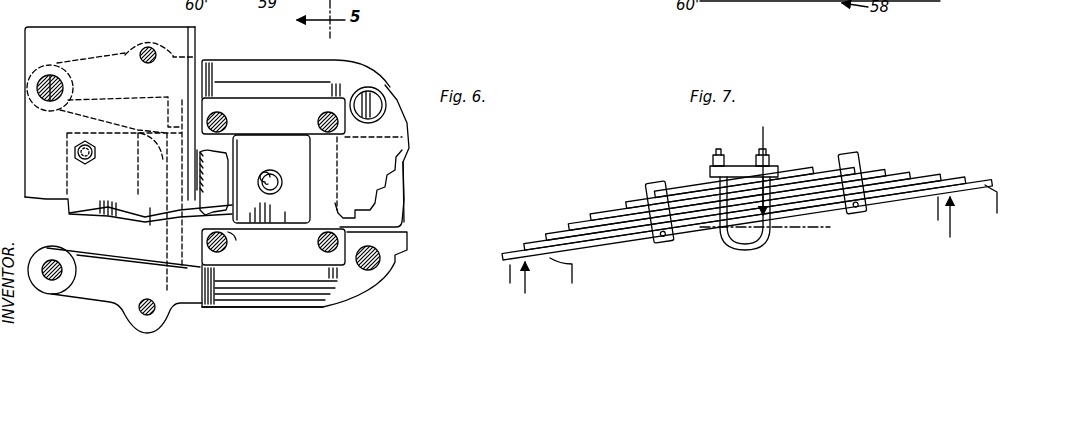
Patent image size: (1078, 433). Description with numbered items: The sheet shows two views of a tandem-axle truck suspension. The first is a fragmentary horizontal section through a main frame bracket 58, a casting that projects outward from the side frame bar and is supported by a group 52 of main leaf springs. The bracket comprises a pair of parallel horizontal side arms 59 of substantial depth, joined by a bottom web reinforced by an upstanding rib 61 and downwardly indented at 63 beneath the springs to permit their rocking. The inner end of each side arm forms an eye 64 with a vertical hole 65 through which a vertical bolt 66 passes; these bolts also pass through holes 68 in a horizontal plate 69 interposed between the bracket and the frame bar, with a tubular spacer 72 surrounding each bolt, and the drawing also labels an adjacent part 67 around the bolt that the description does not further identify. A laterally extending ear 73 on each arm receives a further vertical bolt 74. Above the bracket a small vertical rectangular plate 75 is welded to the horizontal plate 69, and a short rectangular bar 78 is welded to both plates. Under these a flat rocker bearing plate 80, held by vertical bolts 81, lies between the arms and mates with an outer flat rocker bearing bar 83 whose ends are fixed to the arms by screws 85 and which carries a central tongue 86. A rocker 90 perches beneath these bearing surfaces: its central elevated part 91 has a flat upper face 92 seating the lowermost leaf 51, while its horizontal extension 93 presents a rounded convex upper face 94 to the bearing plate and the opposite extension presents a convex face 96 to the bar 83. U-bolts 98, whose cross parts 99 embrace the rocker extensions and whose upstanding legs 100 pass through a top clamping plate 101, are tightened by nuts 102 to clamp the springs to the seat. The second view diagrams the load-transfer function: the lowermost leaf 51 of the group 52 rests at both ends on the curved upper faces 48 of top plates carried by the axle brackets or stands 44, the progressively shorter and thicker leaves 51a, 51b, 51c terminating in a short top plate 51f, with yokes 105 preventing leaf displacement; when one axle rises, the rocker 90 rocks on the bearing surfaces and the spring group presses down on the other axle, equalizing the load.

In FIG. 7, the axle bracket or stand 44 is at (578, 280).
In FIG. 7, the curved upper face 48 is at (575, 260).
In FIG. 7, the lowermost leaf 51 is at (880, 200).
In FIG. 7, the leaf 51a is at (970, 182).
In FIG. 7, the leaf 51b is at (944, 178).
In FIG. 7, the leaf 51c is at (912, 176).
In FIG. 7, the short top plate 51f is at (812, 164).
In FIG. 7, the group of main leaf springs 52 is at (880, 168).
In FIG. 6, the main frame bracket 58 is at (327, 308).
In FIG. 6, the side arms 59 is at (258, 84).
In FIG. 6, the rib 61 is at (172, 262).
In FIG. 6, the downward indentation 63 is at (307, 292).
In FIG. 6, the eye 64 is at (48, 291).
In FIG. 6, the vertical hole 65 is at (51, 265).
In FIG. 6, the vertical bolt 66 is at (70, 91).
In FIG. 6, the bushing 67 is at (30, 101).
In FIG. 6, the holes 68 is at (52, 80).
In FIG. 6, the horizontal plate 69 is at (44, 34).
In FIG. 6, the tubular spacer 72 is at (49, 106).
In FIG. 6, the laterally extending ear 73 is at (148, 316).
In FIG. 6, the vertical bolt 74 is at (148, 62).
In FIG. 6, the small vertical rectangular plate 75 is at (196, 42).
In FIG. 6, the short rectangular bar 78 is at (210, 174).
In FIG. 6, the flat rocker bearing plate 80 is at (67, 207).
In FIG. 6, the vertical bolts 81 is at (74, 156).
In FIG. 6, the outer flat rocker bearing bar 83 is at (409, 129).
In FIG. 6, the screws 85 is at (384, 97).
In FIG. 6, the central tongue 86 is at (322, 183).
In FIG. 6, the rocker 90 is at (407, 192).
In FIG. 7, the rocker 90 is at (752, 253).
In FIG. 6, the central elevated part 91 is at (308, 228).
In FIG. 6, the flat upper face 92 is at (271, 179).
In FIG. 6, the horizontal extension 93 is at (149, 217).
In FIG. 6, the rounded convex upper face 94 is at (266, 247).
In FIG. 6, the rounded convex upper face 96 is at (398, 163).
In FIG. 6, the U-bolt 98 is at (229, 122).
In FIG. 7, the U-bolt 98 is at (715, 154).
In FIG. 6, the cross part 99 is at (241, 243).
In FIG. 7, the cross part 99 is at (766, 247).
In FIG. 6, the upstanding legs 100 is at (317, 121).
In FIG. 7, the top clamping plate 101 is at (740, 165).
In FIG. 7, the nuts 102 is at (712, 161).
In FIG. 7, the yokes 105 is at (643, 196).